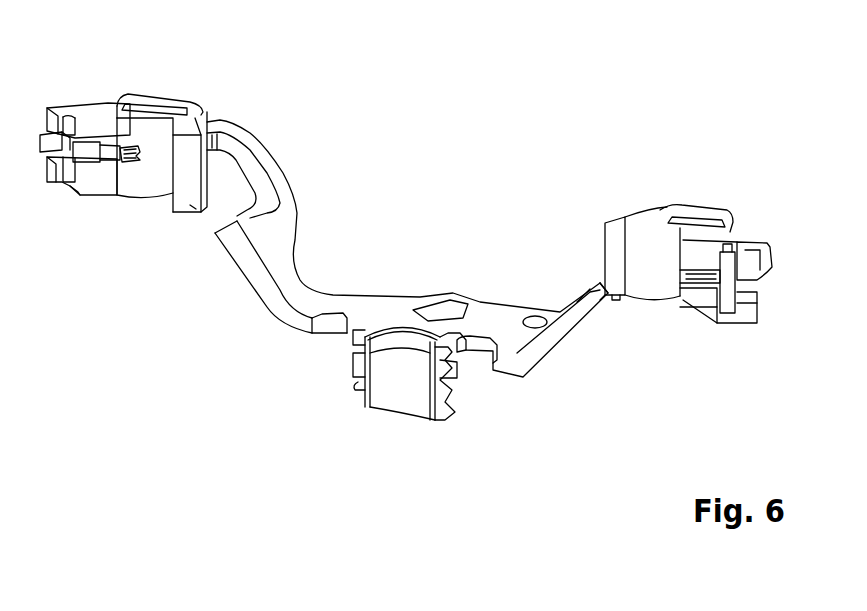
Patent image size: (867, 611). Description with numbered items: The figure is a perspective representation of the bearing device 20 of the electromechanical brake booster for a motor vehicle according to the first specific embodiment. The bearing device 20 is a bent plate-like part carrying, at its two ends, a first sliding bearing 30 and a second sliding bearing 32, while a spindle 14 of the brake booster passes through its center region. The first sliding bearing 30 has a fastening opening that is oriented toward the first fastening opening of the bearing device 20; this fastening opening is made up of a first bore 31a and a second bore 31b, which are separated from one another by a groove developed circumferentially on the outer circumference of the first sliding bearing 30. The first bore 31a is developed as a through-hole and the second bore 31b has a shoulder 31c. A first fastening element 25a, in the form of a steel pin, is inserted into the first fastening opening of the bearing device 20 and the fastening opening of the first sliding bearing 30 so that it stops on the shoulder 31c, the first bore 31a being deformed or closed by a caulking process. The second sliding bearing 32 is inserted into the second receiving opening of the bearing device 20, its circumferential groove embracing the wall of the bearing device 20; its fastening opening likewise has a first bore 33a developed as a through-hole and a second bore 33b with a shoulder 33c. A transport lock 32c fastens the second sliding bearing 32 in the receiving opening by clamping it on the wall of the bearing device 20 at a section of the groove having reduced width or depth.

The second sliding bearing 32 is at (185, 97).
The first bore 33a is at (69, 118).
The second bore 33b is at (72, 185).
The shoulder 33c is at (85, 194).
The transport lock 32c is at (128, 165).
The bearing device 20 is at (460, 292).
The spindle 14 is at (355, 386).
The first sliding bearing 30 is at (690, 196).
The first bore 31a is at (741, 240).
The second bore 31b is at (742, 318).
The shoulder 31c is at (722, 326).
The first fastening element 25a is at (740, 285).